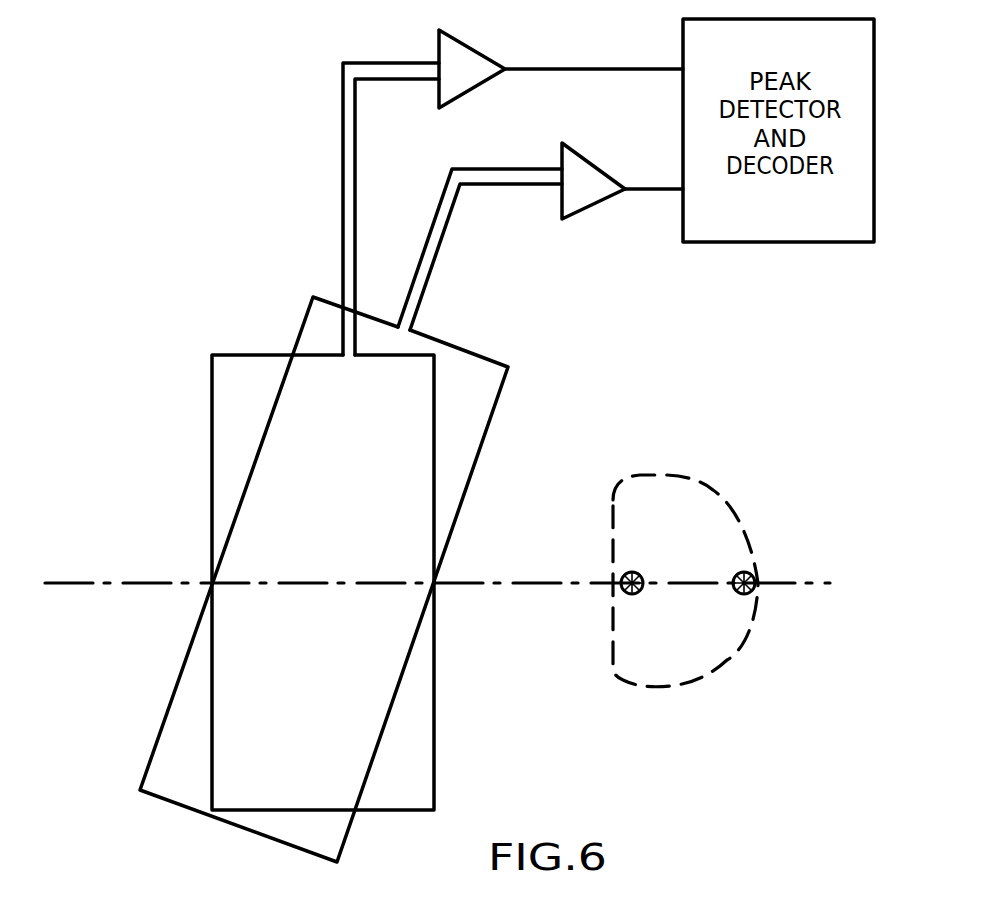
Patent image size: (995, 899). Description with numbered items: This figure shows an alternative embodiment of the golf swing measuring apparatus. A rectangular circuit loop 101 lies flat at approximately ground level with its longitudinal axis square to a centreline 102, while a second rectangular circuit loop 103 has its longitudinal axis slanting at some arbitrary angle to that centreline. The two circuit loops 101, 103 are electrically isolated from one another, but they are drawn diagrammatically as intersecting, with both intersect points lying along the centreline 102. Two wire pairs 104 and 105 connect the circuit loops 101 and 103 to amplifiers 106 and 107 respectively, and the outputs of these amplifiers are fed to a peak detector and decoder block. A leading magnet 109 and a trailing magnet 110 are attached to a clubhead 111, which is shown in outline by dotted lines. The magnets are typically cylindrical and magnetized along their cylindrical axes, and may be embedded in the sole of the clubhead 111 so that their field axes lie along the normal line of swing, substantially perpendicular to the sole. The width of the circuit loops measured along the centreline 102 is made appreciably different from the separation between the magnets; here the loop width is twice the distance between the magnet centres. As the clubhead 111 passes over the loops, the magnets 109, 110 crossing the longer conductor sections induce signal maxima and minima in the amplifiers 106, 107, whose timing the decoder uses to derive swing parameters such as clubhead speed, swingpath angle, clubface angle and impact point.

The rectangular circuit loop 101 is at (435, 745).
The centreline 102 is at (77, 583).
The second rectangular circuit loop 103 is at (503, 390).
The wire pair 104 is at (343, 214).
The wire pair 105 is at (432, 253).
The amplifier 106 is at (477, 90).
The amplifier 107 is at (583, 212).
The leading magnet 109 is at (623, 597).
The trailing magnet 110 is at (747, 597).
The clubhead 111 is at (713, 490).